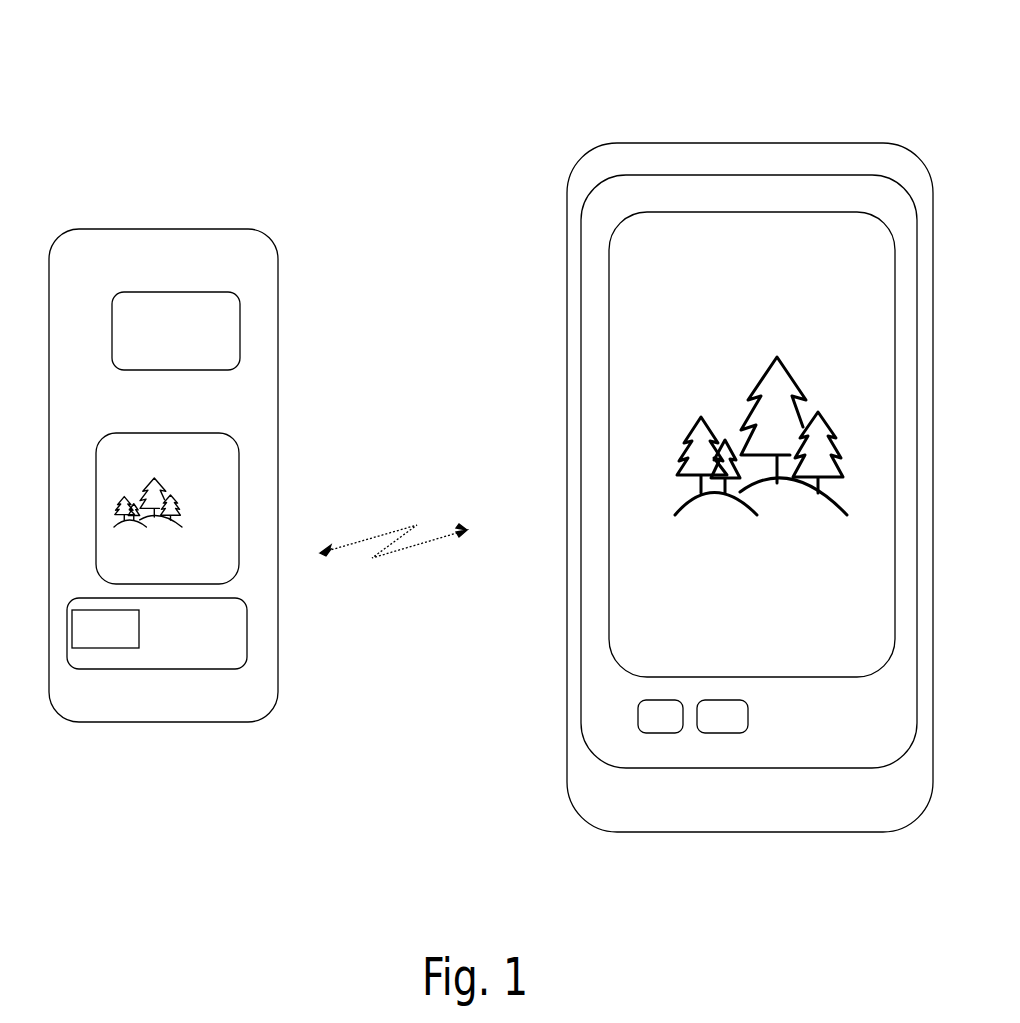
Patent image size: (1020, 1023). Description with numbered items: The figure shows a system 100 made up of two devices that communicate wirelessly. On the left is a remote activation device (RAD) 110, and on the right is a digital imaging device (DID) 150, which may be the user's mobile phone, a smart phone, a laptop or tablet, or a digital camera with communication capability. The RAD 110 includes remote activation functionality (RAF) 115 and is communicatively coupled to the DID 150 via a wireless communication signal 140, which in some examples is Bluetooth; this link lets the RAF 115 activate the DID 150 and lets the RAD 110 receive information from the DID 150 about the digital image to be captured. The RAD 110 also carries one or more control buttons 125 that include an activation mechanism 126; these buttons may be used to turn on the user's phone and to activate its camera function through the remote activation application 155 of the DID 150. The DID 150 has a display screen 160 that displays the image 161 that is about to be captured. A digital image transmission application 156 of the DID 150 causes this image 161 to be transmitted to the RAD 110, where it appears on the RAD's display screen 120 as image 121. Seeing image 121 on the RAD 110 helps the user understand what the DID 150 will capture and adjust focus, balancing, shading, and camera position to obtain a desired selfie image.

The system 100 is at (475, 439).
The remote activation device 110 is at (163, 475).
The remote activation functionality 115 is at (176, 331).
The display screen 120 is at (167, 508).
The image 121 is at (165, 508).
The control buttons 125 is at (157, 633).
The activation mechanism 126 is at (105, 629).
The wireless communication signal 140 is at (393, 552).
The digital imaging device 150 is at (750, 487).
The remote activation application 155 is at (638, 713).
The digital image transmission application 156 is at (740, 713).
The display screen 160 is at (752, 444).
The image 161 is at (742, 449).